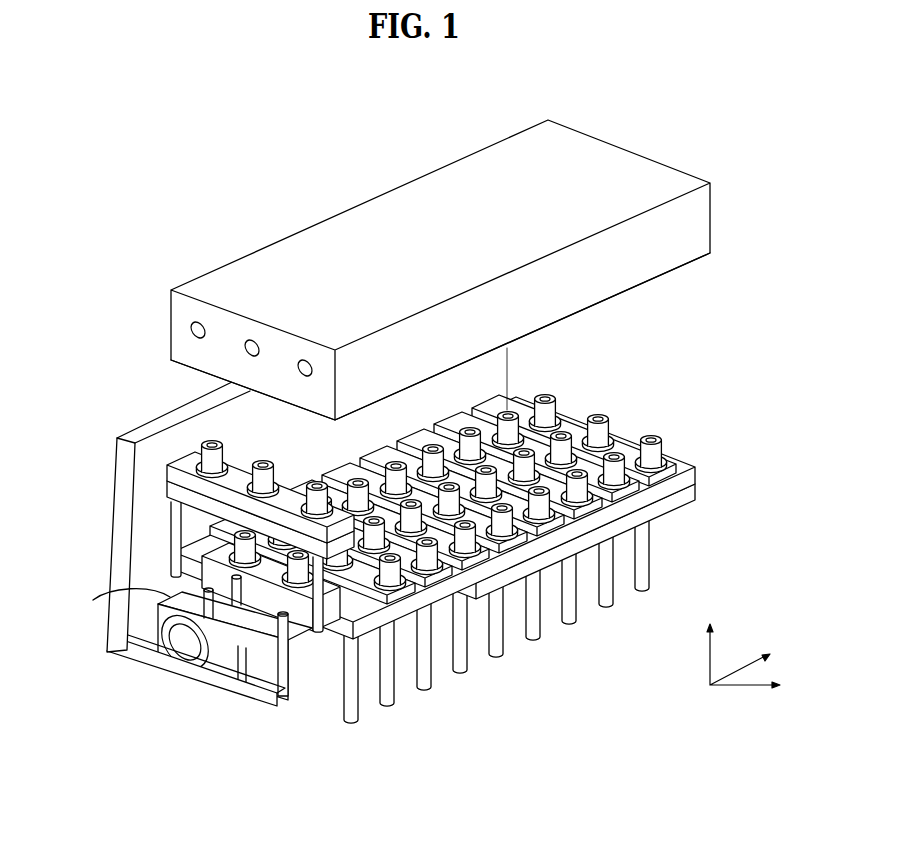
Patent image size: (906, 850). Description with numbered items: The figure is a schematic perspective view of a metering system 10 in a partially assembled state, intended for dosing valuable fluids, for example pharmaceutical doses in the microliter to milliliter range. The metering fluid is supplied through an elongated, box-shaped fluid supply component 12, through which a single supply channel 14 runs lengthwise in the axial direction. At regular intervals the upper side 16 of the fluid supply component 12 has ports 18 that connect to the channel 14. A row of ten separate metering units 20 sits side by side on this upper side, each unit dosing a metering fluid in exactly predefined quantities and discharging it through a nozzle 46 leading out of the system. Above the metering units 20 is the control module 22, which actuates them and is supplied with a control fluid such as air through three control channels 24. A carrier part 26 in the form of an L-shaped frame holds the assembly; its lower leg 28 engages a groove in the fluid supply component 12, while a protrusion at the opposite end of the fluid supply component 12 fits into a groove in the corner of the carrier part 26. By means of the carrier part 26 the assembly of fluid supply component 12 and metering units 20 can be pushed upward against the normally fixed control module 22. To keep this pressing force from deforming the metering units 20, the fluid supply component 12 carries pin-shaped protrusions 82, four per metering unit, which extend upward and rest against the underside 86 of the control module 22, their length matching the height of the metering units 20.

The metering system 10 is at (131, 158).
The fluid supply component 12 is at (292, 704).
The supply channel 14 is at (182, 645).
The upper side 16 is at (257, 697).
The ports 18 is at (172, 611).
The metering units 20 is at (697, 462).
The control module 22 is at (645, 165).
The control channels 24 is at (306, 360).
The carrier part 26 is at (113, 467).
The lower leg 28 is at (210, 688).
The nozzle 46 is at (350, 702).
The pin-shaped protrusions 82 is at (286, 632).
The underside 86 is at (662, 275).